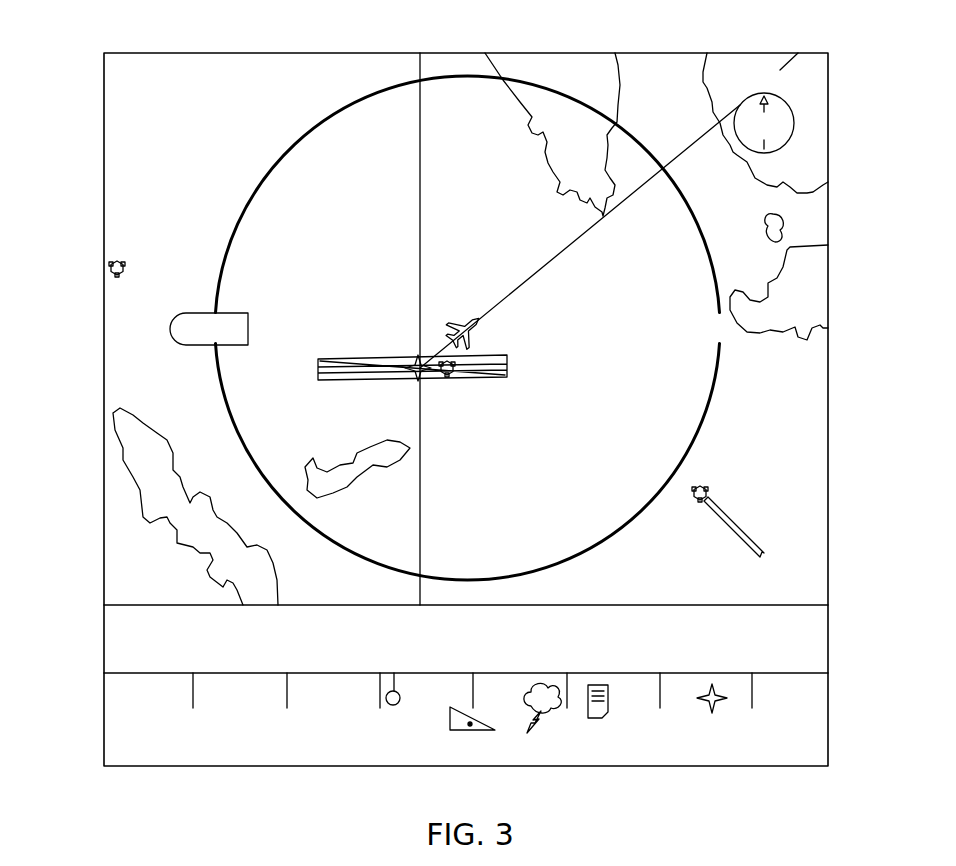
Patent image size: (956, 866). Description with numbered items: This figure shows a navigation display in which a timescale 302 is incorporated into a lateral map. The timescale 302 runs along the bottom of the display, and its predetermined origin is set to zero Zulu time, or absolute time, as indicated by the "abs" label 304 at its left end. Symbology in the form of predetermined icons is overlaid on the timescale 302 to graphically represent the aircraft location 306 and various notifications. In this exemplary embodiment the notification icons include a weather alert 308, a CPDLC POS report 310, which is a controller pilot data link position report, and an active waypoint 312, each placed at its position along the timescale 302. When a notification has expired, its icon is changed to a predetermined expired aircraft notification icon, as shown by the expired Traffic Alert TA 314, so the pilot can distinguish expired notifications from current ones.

The timescale 302 is at (104, 705).
The abs indicator 304 is at (127, 765).
The aircraft location 306 is at (450, 724).
The weather alert 308 is at (525, 730).
The CPDLC POS report 310 is at (606, 708).
The active waypoint 312 is at (713, 713).
The expired Traffic Alert TA 314 is at (386, 694).